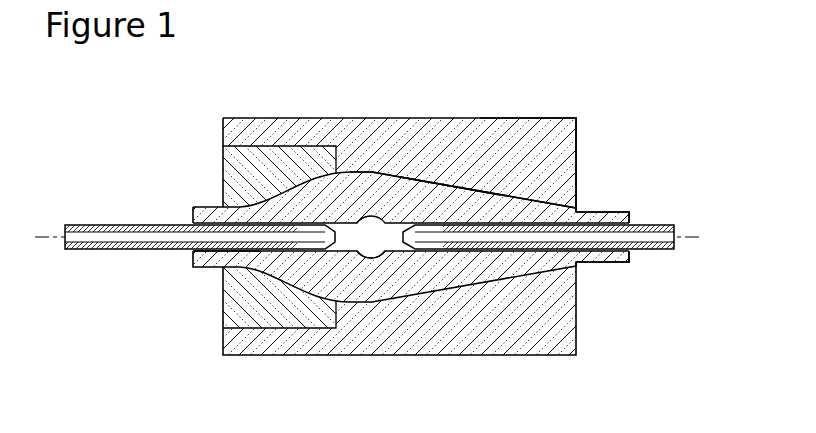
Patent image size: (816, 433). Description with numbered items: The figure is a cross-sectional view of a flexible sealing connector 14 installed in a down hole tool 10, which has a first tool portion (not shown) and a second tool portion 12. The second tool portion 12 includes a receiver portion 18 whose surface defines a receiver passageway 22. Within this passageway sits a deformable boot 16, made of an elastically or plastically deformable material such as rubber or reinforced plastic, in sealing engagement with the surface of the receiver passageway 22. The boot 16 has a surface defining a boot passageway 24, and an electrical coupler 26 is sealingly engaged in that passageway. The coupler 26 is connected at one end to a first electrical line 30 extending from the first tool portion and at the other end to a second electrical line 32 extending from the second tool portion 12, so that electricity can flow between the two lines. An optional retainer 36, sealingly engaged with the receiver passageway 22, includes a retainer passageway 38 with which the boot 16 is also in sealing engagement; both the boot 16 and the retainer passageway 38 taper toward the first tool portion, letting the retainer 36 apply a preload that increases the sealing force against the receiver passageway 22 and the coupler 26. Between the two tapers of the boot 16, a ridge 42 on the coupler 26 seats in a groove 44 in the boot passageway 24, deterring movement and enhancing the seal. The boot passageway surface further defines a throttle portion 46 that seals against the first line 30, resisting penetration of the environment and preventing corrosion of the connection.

The down hole tool 10 is at (132, 114).
The second tool portion 12 is at (361, 218).
The flexible sealing connector 14 is at (358, 218).
The deformable boot 16 is at (371, 228).
The receiver portion 18 is at (497, 190).
The receiver passageway 22 is at (445, 188).
The boot passageway 24 is at (592, 222).
The electrical coupler 26 is at (416, 184).
The first electrical line 30 is at (117, 249).
The second electrical line 32 is at (651, 226).
The retainer 36 is at (275, 162).
The retainer passageway 38 is at (302, 285).
The ridge 42 is at (388, 228).
The groove 44 is at (372, 262).
The throttle portion 46 is at (248, 262).